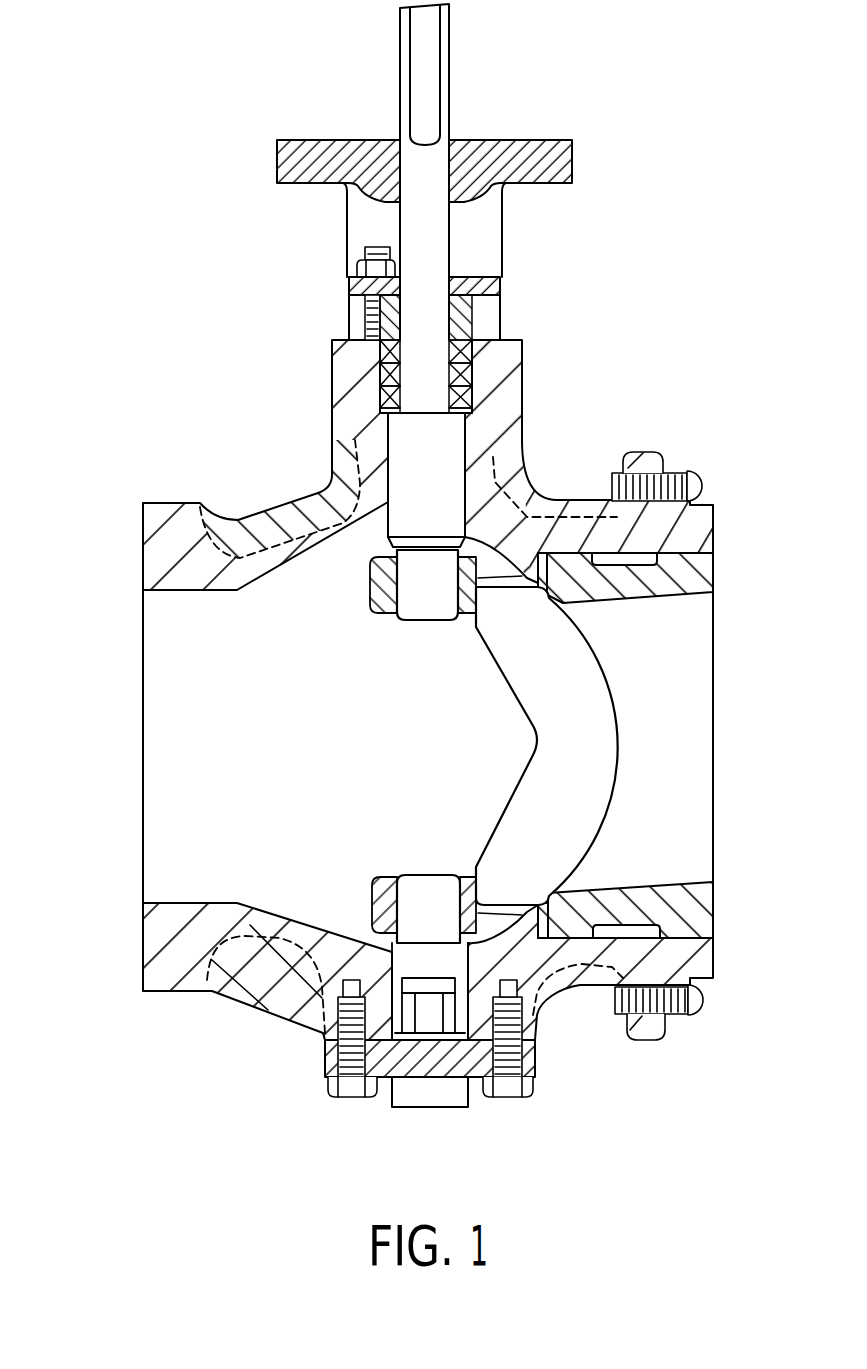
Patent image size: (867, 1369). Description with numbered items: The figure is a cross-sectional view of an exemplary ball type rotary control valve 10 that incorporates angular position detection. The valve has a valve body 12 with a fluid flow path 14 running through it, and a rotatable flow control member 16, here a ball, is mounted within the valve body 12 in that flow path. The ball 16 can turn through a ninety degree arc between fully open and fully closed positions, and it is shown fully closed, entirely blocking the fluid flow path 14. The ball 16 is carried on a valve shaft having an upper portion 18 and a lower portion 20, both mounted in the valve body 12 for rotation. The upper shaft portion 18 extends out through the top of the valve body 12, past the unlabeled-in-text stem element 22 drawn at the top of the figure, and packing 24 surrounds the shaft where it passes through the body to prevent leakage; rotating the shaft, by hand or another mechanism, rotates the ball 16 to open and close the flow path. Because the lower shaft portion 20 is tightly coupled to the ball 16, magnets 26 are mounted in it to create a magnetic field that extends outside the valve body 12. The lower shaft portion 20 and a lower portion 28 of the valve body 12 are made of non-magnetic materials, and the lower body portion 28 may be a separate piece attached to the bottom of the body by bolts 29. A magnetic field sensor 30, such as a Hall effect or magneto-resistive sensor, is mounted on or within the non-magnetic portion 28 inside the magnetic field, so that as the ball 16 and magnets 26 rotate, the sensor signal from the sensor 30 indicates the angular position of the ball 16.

The rotary control valve 10 is at (399, 585).
The valve body 12 is at (186, 503).
The fluid flow path 14 is at (177, 695).
The rotatable flow control member 16 is at (618, 690).
The upper portion of the valve shaft 18 is at (384, 612).
The lower portion of the valve shaft 20 is at (415, 963).
The valve stem (shaft) 22 is at (442, 148).
The packing 24 is at (503, 340).
The magnets 26 is at (452, 1007).
The lower portion of the valve body 28 is at (545, 1062).
The bolts 29 is at (352, 1098).
The magnetic field sensor 30 is at (425, 1108).